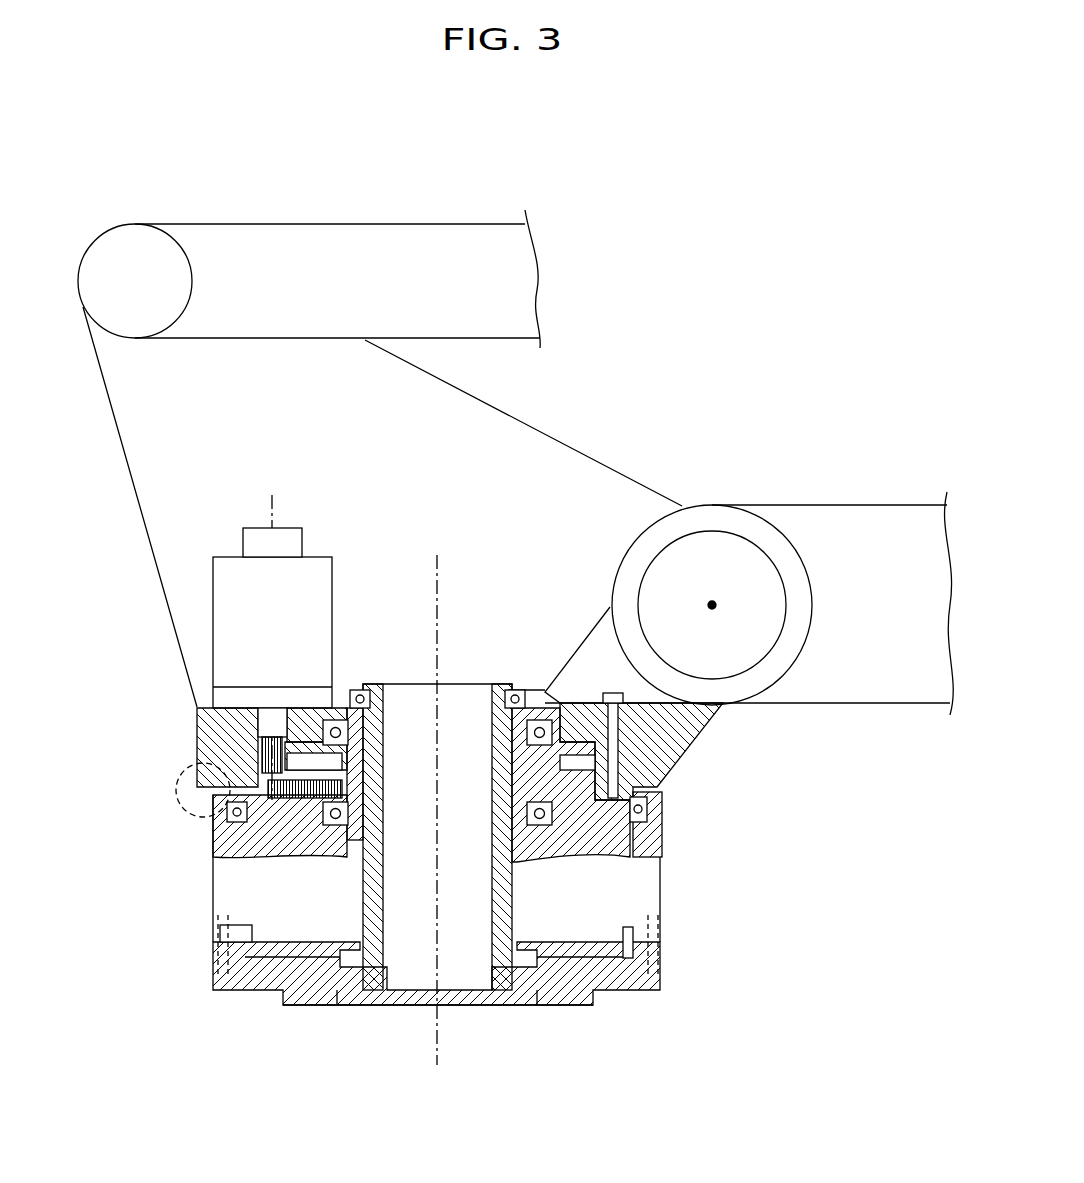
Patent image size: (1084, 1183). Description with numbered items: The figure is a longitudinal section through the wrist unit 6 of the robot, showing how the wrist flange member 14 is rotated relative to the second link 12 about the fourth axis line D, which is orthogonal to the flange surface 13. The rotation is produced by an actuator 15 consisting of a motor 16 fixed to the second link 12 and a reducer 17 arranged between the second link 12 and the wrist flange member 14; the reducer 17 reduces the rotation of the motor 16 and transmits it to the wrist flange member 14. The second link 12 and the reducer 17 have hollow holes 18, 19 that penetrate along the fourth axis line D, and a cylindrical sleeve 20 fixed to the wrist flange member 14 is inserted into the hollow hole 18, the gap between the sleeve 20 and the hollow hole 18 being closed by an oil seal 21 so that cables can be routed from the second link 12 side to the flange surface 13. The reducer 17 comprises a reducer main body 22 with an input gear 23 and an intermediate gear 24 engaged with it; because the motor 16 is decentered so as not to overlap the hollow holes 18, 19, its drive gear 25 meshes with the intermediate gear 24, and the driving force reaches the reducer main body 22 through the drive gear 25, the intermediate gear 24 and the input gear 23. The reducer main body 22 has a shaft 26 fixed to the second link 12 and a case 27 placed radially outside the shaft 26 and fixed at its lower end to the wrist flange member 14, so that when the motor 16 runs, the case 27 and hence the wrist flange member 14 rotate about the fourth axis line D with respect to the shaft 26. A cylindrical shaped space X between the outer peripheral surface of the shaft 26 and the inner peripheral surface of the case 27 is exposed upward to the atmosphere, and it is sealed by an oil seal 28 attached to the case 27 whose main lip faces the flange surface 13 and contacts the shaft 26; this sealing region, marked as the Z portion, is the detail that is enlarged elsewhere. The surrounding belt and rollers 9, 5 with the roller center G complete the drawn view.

The driven roller 9 is at (328, 222).
The drive roller 5 is at (873, 505).
The center of drive roller G is at (718, 605).
The second link 12 is at (138, 494).
The oil seal 28 is at (648, 792).
The fourth axis line D is at (437, 570).
The actuator 15 is at (110, 607).
The motor 16 is at (213, 632).
The reducer 17 is at (178, 797).
The drive gear 25 is at (232, 800).
The hollow hole 19 is at (378, 925).
The sleeve 20 is at (500, 690).
The input gear 23 is at (280, 795).
The intermediate gear 24 is at (318, 735).
The hollow hole 18 is at (365, 690).
The oil seal 21 is at (522, 690).
The case 27 is at (662, 848).
The cylindrical shaped space X is at (660, 840).
The Z portion Z is at (200, 815).
The reducer main body 22 is at (668, 910).
The flange surface 13 is at (565, 1007).
The wrist flange member 14 is at (318, 1007).
The shaft 26 is at (613, 972).
The wrist unit 6 is at (200, 1065).